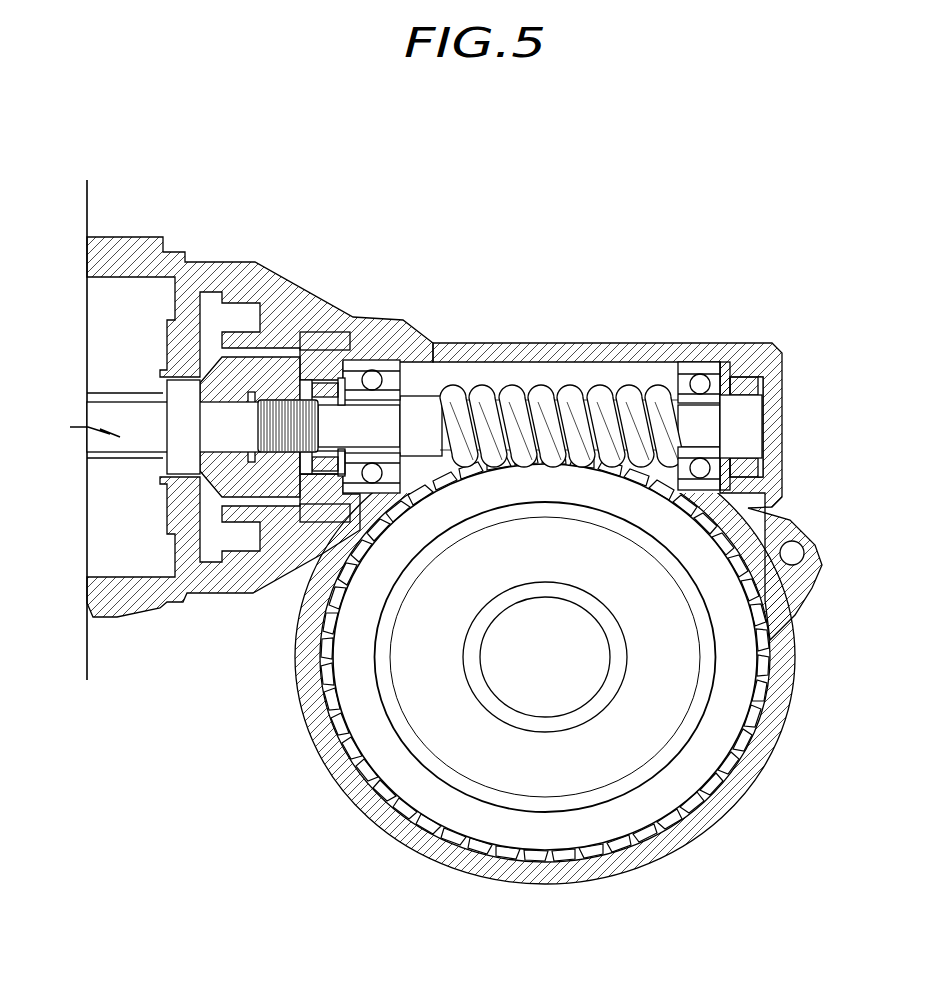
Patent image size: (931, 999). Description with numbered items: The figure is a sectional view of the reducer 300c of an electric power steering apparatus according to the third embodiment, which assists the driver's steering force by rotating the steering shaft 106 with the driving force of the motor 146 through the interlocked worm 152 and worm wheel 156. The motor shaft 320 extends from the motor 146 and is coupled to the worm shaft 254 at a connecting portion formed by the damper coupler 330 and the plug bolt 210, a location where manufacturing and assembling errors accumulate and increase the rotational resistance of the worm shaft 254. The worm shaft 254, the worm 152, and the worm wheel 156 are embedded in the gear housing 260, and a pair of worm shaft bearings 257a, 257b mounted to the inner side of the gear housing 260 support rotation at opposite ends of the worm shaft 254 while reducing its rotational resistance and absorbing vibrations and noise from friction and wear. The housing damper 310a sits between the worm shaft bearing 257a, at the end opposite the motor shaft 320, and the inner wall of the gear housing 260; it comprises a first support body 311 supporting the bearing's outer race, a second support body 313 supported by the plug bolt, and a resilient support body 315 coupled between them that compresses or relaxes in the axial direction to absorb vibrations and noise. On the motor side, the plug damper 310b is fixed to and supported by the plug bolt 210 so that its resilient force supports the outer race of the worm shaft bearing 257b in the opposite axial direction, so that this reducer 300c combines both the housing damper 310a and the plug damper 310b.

The reducer 300c is at (181, 168).
The motor 146 is at (130, 241).
The damper coupler 330 is at (258, 372).
The plug bolt 210 is at (334, 346).
The worm shaft bearing 257b is at (378, 380).
The worm shaft 254 is at (378, 414).
The gear housing 260 is at (528, 352).
The worm 152 is at (598, 393).
The worm shaft bearing 257a is at (700, 384).
The first support body 311 is at (731, 368).
The resilient support body 315 is at (750, 380).
The second support body 313 is at (760, 382).
The housing damper 310a is at (546, 469).
The plug damper 310b is at (222, 603).
The motor shaft 320 is at (205, 428).
The worm wheel 156 is at (388, 748).
The steering shaft 106 is at (530, 697).